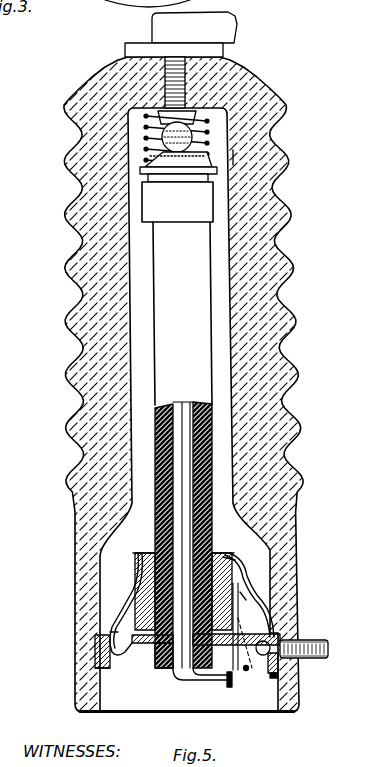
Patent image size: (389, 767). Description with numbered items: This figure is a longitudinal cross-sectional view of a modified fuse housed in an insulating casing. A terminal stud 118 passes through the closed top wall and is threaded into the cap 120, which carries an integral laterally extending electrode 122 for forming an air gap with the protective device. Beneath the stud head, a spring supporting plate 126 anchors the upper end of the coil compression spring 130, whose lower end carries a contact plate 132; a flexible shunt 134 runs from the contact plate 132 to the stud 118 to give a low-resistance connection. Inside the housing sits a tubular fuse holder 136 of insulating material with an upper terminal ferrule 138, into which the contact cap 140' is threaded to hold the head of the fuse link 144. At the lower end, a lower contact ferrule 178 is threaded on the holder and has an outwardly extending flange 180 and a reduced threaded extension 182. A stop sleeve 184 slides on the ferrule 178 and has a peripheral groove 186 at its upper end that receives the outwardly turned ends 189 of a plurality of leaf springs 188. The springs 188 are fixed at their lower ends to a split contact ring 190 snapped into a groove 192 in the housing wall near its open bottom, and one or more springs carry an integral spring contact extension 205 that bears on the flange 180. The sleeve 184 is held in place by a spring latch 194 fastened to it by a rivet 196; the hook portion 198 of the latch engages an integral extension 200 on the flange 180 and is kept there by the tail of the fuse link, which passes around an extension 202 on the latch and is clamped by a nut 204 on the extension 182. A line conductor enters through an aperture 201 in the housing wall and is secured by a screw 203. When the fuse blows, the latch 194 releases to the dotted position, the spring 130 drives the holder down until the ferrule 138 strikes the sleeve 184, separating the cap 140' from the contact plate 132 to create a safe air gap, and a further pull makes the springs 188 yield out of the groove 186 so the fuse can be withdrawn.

The terminal stud 118 is at (170, 82).
The cap 120 is at (213, 50).
The electrode 122 is at (230, 27).
The spring supporting plate 126 is at (210, 100).
The coil compression spring 130 is at (202, 132).
The contact plate 132 is at (152, 160).
The flexible shunt 134 is at (195, 133).
The tubular fuse holder 136 is at (197, 332).
The terminal ferrule 138 is at (198, 203).
The contact cap 140' is at (240, 179).
The fuse link 144 is at (188, 458).
The lower contact ferrule 178 is at (238, 605).
The flange 180 is at (247, 636).
The reduced threaded extension 182 is at (173, 672).
The stop sleeve 184 is at (223, 552).
The peripheral groove 186 is at (225, 563).
The leaf springs 188 is at (130, 587).
The outwardly turned ends 189 is at (133, 552).
The split contact ring 190 is at (100, 643).
The groove 192 is at (95, 661).
The spring latch 194 is at (268, 620).
The rivet 196 is at (240, 594).
The hook portion 198 is at (246, 670).
The integral extension 200 is at (278, 678).
The aperture 201 is at (302, 657).
The extension 202 is at (228, 682).
The screw 203 is at (279, 670).
The nut 204 is at (163, 670).
The spring contact extension 205 is at (116, 631).